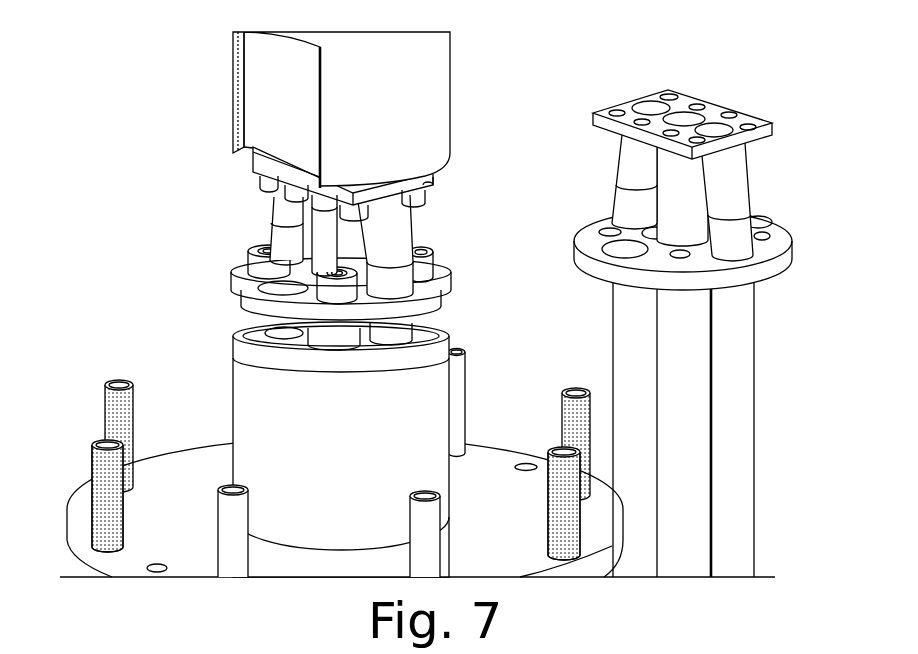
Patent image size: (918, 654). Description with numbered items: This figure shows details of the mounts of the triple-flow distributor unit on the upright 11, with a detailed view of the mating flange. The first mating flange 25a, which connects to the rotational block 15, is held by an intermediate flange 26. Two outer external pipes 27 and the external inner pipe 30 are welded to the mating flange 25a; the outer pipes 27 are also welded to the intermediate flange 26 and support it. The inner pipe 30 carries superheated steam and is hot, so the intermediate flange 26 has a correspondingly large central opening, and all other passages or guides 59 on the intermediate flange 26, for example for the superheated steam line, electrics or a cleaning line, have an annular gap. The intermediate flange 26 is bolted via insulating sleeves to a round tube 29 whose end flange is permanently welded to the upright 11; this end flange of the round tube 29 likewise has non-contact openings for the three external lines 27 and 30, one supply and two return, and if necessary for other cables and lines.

The rotational block 15 is at (258, 92).
The first mating flange 25a is at (253, 160).
The outer pipes 27 is at (272, 225).
The guides 59 is at (606, 231).
The inner pipe 30 is at (699, 227).
The intermediate flange 26 is at (573, 248).
The round tube 29 is at (242, 398).
The upright 11 is at (452, 332).